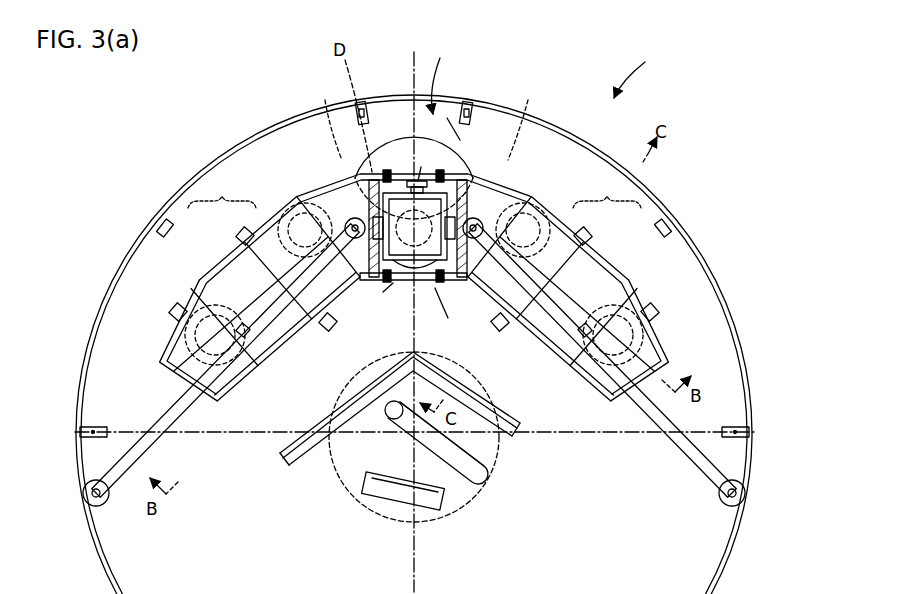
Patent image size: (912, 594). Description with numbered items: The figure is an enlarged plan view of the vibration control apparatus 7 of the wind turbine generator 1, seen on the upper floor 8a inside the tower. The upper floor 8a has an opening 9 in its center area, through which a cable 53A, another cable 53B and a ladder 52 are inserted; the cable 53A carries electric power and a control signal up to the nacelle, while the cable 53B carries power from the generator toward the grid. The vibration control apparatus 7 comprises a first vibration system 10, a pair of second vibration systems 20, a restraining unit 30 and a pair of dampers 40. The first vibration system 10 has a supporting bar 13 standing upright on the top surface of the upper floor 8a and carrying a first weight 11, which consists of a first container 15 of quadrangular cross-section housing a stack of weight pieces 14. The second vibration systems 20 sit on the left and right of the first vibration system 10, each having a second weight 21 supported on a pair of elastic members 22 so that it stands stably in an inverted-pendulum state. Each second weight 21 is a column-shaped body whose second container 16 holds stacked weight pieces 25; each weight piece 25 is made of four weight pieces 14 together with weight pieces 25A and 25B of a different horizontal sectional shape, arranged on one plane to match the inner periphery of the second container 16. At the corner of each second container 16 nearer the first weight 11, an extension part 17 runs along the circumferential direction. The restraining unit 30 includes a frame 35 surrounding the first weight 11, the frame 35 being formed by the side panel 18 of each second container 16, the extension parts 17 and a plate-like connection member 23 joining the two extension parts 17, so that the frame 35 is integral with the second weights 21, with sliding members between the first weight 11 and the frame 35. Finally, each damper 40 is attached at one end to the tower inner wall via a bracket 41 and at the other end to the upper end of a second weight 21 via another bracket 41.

The wind turbine generator 1 is at (633, 69).
The vibration control apparatus 7 is at (438, 75).
The upper floor 8a is at (262, 551).
The opening 9 is at (374, 466).
The first vibration system 10 is at (402, 130).
The first weight 11 is at (463, 135).
The supporting bar 13 is at (379, 296).
The weight piece 14 is at (292, 257).
The first container 15 is at (448, 312).
The second container 16 is at (240, 252).
The extension part 17 is at (362, 101).
The side panel 18 is at (338, 282).
The second vibration system 20 is at (272, 196).
The second weight 21 is at (414, 192).
The elastic member 22 is at (280, 200).
The connection member 23 is at (425, 164).
The weight piece 25 is at (222, 254).
The weight piece 25A is at (340, 96).
The weight piece 25B is at (166, 366).
The restraining unit 30 is at (352, 216).
The frame 35 is at (407, 290).
The damper 40 is at (160, 448).
The bracket 41 is at (105, 503).
The ladder 52 is at (392, 500).
The cable 53A is at (488, 462).
The cable 53B is at (442, 434).